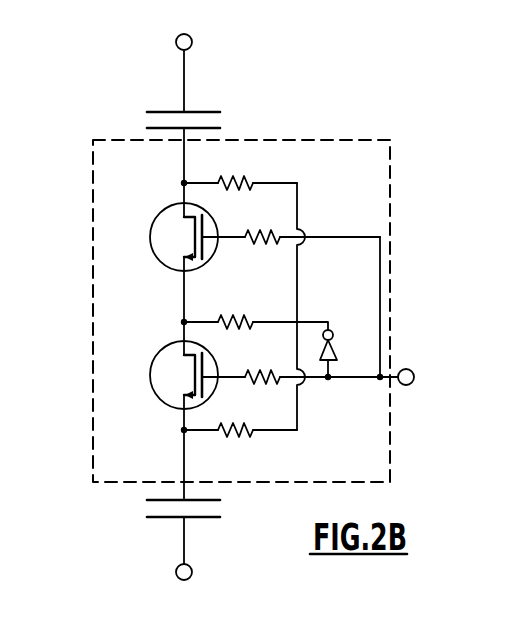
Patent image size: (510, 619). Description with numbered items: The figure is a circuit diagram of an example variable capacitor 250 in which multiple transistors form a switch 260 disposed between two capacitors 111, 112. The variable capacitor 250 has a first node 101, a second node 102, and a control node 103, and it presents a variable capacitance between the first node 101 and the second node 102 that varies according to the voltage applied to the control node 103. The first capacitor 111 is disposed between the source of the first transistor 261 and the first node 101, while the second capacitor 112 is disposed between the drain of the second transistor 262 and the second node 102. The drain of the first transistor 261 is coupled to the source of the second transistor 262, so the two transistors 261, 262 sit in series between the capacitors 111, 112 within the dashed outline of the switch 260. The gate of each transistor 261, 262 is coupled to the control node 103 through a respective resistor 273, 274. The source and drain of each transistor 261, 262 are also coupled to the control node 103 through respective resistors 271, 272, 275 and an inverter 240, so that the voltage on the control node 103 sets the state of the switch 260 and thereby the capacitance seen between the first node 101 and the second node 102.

The first node 101 is at (176, 42).
The second node 102 is at (177, 577).
The control node 103 is at (410, 369).
The first capacitor 111 is at (163, 111).
The second capacitor 112 is at (161, 519).
The inverter 240 is at (362, 302).
The variable capacitor 250 is at (293, 60).
The switch 260 is at (93, 247).
The first transistor 261 is at (172, 268).
The second transistor 262 is at (170, 407).
The resistor 271 is at (219, 179).
The resistor 272 is at (237, 434).
The resistor 273 is at (280, 241).
The resistor 274 is at (280, 381).
The resistor 275 is at (219, 318).